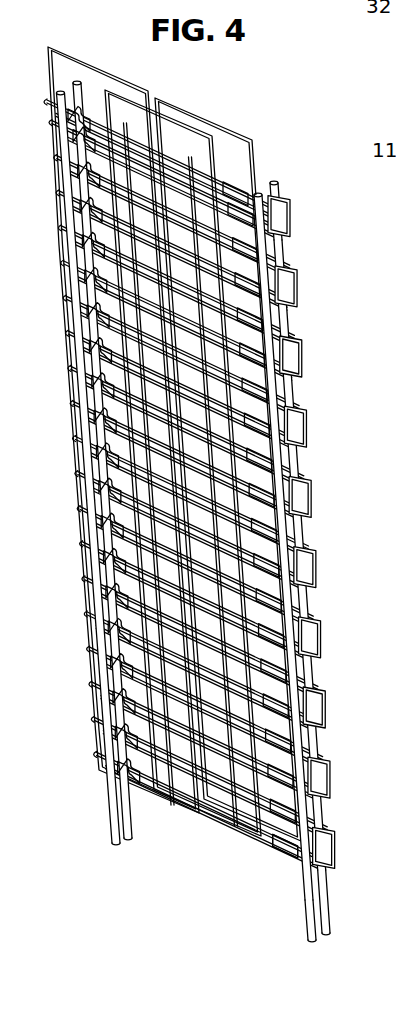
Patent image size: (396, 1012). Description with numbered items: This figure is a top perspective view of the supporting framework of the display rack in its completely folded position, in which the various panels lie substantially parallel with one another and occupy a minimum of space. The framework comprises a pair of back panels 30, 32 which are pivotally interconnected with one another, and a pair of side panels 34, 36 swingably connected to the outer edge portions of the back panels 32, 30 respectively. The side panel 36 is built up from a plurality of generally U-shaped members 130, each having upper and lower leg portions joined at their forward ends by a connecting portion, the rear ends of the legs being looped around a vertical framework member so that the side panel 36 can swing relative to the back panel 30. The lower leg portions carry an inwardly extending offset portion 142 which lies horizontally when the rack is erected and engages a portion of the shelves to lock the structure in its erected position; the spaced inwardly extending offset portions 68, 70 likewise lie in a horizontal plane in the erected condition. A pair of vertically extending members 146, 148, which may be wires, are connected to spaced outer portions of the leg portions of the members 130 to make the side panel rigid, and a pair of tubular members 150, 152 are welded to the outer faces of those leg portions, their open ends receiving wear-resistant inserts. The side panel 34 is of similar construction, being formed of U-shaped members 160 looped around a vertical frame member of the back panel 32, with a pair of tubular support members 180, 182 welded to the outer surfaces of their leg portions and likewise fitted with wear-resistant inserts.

The back panel 30 is at (143, 90).
The back panel 32 is at (221, 128).
The side panel 34 is at (285, 188).
The side panel 36 is at (66, 152).
The inwardly extending offset portion 68 is at (118, 777).
The inwardly extending offset portion 70 is at (292, 858).
The U-shaped member 130 is at (283, 243).
The inwardly extending offset portion 142 is at (300, 867).
The vertically extending member 146 is at (168, 798).
The vertically extending member 148 is at (233, 823).
The tubular member 150 is at (108, 815).
The tubular member 152 is at (307, 925).
The U-shaped member 160 is at (294, 222).
The support member 180 is at (135, 823).
The support member 182 is at (331, 910).